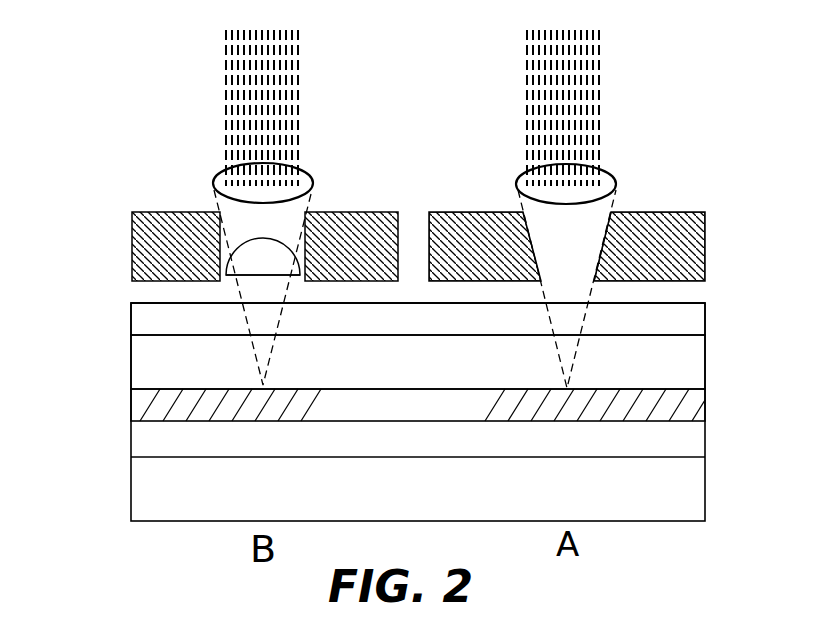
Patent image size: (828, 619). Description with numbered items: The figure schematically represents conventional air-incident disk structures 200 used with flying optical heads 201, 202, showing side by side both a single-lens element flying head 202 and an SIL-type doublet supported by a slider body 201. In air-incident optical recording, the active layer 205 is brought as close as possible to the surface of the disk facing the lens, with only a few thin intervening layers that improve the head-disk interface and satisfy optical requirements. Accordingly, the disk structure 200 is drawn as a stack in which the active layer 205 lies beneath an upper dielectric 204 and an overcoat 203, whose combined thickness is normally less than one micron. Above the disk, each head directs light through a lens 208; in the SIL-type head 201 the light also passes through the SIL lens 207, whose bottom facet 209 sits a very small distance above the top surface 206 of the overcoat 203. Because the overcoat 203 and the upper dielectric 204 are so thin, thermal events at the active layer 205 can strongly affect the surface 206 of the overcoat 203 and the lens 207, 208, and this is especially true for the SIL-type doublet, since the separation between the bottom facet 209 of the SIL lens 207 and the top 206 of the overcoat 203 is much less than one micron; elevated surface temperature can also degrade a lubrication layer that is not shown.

The air-incident disk structure 200 is at (107, 453).
The SIL-type flying optical head 201 is at (185, 200).
The single-lens element flying head 202 is at (639, 194).
The overcoat 203 is at (131, 322).
The upper dielectric 204 is at (131, 366).
The active layer 205 is at (131, 410).
The surface of the overcoat 206 is at (143, 302).
The SIL lens 207 is at (288, 272).
The lens 208 is at (306, 172).
The bottom facet of the SIL lens 209 is at (318, 280).